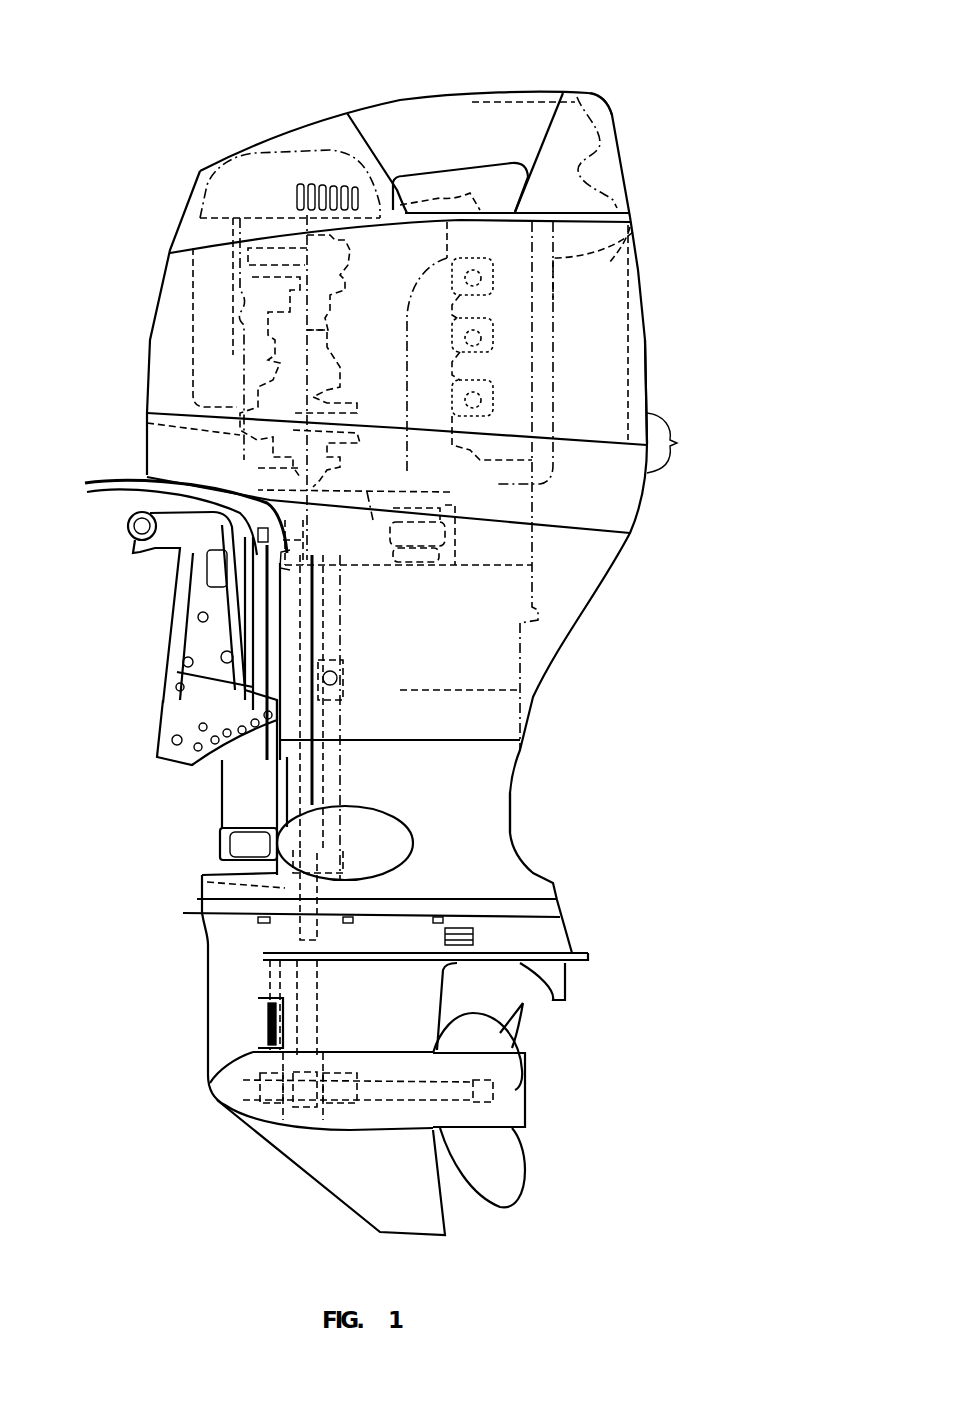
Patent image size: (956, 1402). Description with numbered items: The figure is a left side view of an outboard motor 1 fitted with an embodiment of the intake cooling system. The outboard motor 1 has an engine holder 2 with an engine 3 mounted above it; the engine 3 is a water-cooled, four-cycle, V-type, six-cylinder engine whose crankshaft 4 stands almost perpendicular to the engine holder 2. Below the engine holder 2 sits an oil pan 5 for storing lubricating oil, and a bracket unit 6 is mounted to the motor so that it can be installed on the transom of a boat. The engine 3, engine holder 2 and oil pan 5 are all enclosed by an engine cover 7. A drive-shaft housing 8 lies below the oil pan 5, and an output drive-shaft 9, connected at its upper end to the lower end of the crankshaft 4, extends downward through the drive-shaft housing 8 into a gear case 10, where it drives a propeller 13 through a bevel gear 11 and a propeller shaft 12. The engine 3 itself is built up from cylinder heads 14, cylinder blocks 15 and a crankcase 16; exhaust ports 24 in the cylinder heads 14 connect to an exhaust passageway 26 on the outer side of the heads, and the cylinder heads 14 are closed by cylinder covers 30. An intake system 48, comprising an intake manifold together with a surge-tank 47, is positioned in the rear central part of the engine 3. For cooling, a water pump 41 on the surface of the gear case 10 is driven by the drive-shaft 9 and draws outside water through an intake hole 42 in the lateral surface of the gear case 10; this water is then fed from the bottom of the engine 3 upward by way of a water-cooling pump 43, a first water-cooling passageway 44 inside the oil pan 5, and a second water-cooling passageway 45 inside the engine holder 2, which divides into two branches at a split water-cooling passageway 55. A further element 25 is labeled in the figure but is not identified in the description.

The outboard motor 1 is at (172, 140).
The engine holder 2 is at (537, 547).
The engine 3 is at (192, 297).
The crankshaft 4 is at (240, 355).
The oil pan 5 is at (513, 653).
The bracket unit 6 is at (175, 627).
The engine cover 7 is at (671, 443).
The drive-shaft housing 8 is at (512, 792).
The drive-shaft 9 is at (300, 760).
The gear case 10 is at (557, 930).
The bevel gear 11 is at (257, 1120).
The propeller shaft 12 is at (360, 1133).
The propeller 13 is at (517, 1108).
The cylinder head 14 is at (472, 227).
The cylinder block 15 is at (387, 245).
The crankcase 16 is at (147, 413).
The exhaust port 24 is at (490, 348).
The throttle body 25 is at (490, 326).
The exhaust passageway 26 is at (450, 492).
The cylinder cover 30 is at (633, 213).
The water pump 41 is at (202, 875).
The intake hole 42 is at (263, 1028).
The water-cooling pump 43 is at (333, 782).
The first water-cooling passageway 44 is at (337, 628).
The second water-cooling passageway 45 is at (333, 557).
The surge-tank 47 is at (640, 247).
The intake system 48 is at (630, 380).
The split water-cooling passageway 55 is at (383, 497).